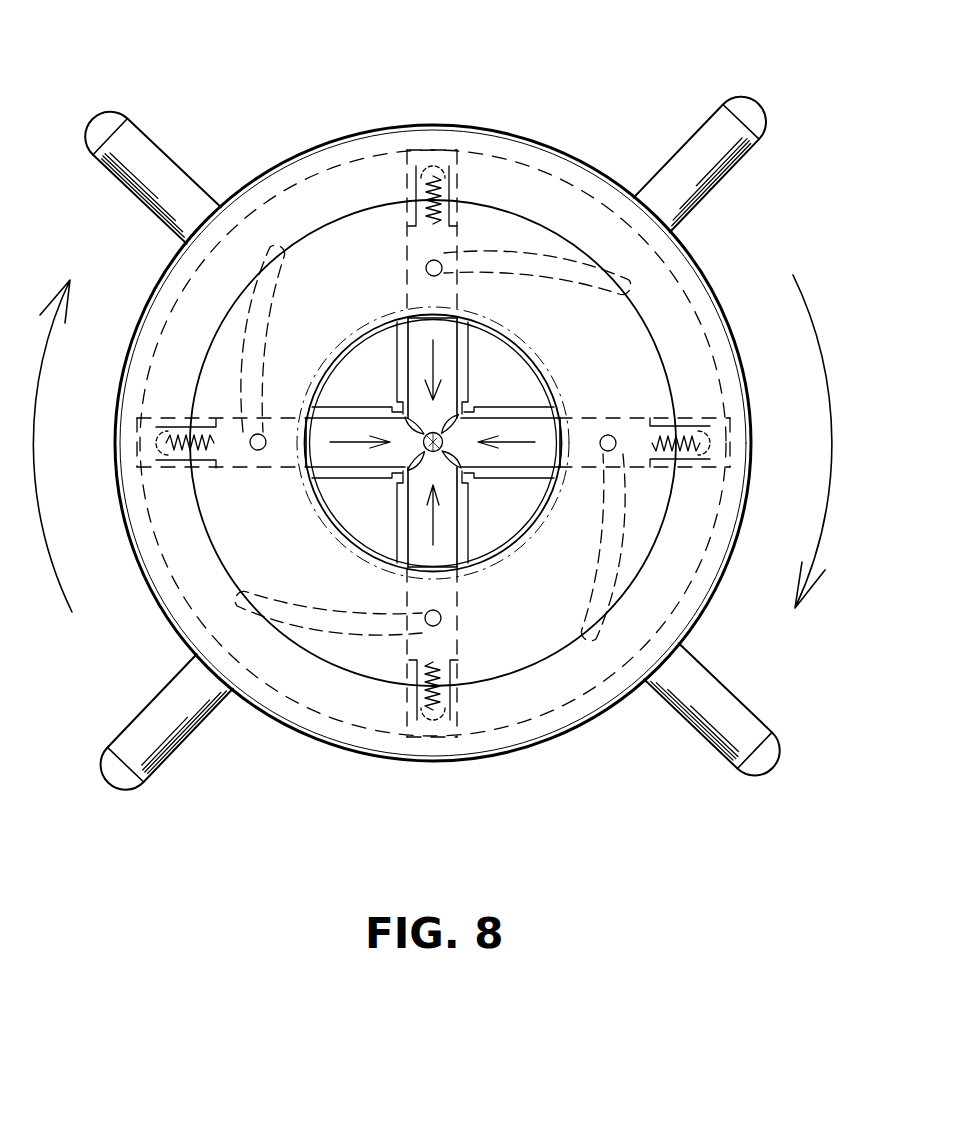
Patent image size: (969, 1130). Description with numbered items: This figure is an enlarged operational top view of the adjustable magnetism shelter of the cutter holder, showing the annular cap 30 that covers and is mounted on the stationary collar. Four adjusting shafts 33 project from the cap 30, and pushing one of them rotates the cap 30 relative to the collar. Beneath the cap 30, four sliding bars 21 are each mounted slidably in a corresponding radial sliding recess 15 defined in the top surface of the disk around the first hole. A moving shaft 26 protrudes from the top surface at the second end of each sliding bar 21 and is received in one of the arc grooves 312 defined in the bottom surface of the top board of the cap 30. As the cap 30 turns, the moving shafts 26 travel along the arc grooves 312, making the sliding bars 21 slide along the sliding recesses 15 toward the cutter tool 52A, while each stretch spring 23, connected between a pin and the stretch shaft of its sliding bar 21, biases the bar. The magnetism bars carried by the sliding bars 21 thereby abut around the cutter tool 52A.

The cap 30 is at (517, 90).
The sliding recess 15 is at (418, 152).
The arc groove 312 is at (566, 258).
The adjusting shaft 33 is at (732, 153).
The sliding bar 21 is at (421, 334).
The moving shaft 26 is at (440, 282).
The stretch spring 23 is at (668, 432).
The cutter tool 52A is at (430, 448).